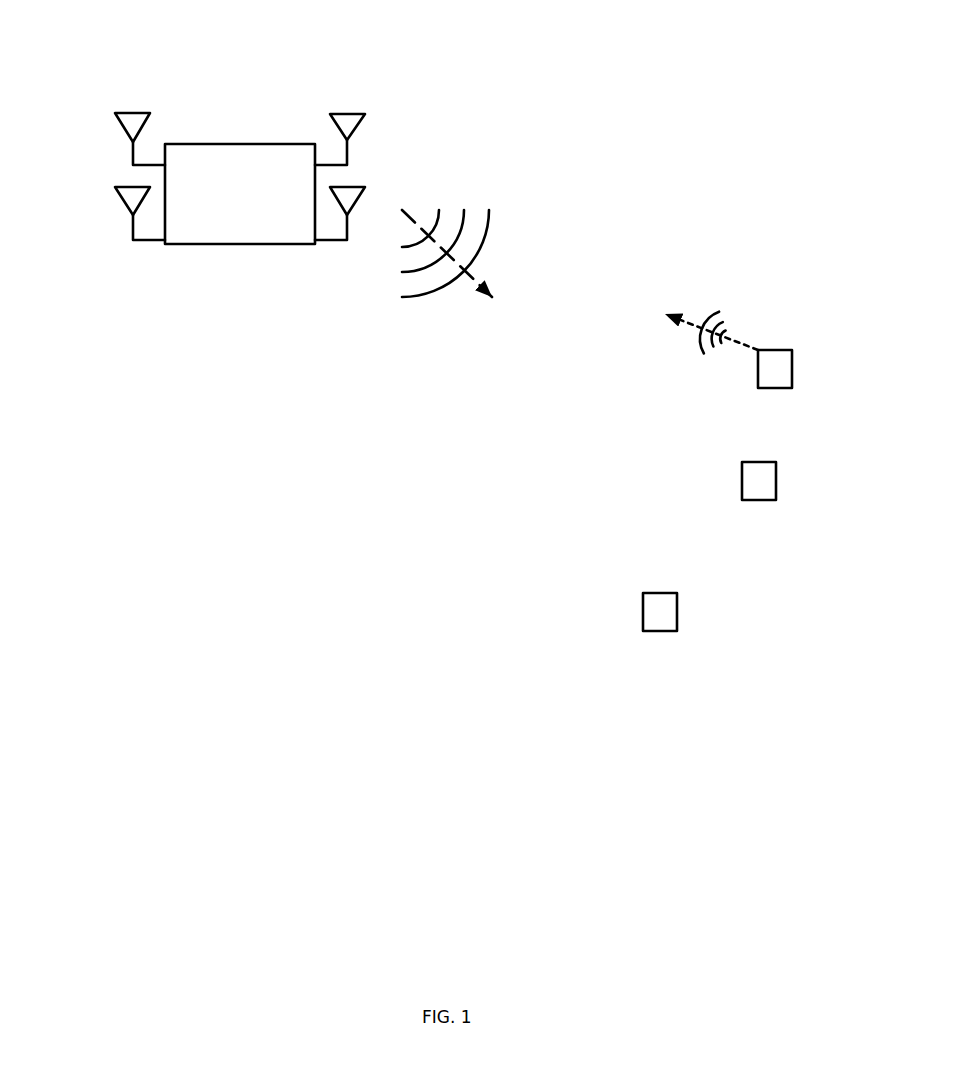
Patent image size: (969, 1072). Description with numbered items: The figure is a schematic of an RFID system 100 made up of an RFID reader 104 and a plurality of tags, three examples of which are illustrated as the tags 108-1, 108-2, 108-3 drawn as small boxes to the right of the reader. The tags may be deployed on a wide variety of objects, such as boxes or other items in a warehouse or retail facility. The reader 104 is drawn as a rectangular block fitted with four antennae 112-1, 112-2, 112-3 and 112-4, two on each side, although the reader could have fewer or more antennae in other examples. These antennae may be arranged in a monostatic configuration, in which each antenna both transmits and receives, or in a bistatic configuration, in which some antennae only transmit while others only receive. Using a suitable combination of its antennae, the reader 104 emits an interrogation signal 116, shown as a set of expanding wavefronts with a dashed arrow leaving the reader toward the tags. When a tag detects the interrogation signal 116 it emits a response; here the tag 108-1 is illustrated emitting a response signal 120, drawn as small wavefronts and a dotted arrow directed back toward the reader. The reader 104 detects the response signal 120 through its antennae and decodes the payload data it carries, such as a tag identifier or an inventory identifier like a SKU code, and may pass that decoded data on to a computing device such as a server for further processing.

The RFID system 100 is at (313, 538).
The RFID reader 104 is at (238, 250).
The tag 108-1 is at (792, 368).
The tag 108-2 is at (758, 500).
The tag 108-3 is at (658, 631).
The antenna 112-1 is at (133, 112).
The antenna 112-2 is at (130, 187).
The antenna 112-3 is at (347, 112).
The antenna 112-4 is at (347, 187).
The interrogation signal 116 is at (478, 310).
The response signal 120 is at (690, 350).